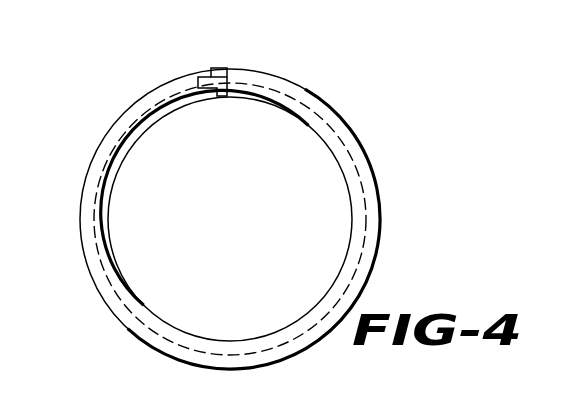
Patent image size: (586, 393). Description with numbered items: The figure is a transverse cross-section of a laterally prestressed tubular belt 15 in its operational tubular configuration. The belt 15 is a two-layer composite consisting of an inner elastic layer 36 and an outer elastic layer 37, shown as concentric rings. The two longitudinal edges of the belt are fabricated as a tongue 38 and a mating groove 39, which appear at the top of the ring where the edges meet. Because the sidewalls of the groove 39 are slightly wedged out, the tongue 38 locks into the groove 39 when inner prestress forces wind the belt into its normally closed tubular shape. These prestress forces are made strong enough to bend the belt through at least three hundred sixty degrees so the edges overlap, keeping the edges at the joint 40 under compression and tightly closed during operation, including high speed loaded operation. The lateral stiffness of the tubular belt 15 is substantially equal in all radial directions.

The tubular belt 15 is at (230, 200).
The inner elastic layer 36 is at (110, 257).
The outer elastic layer 37 is at (85, 242).
The tongue 38 is at (214, 90).
The groove 39 is at (217, 67).
The joint 40 is at (227, 68).